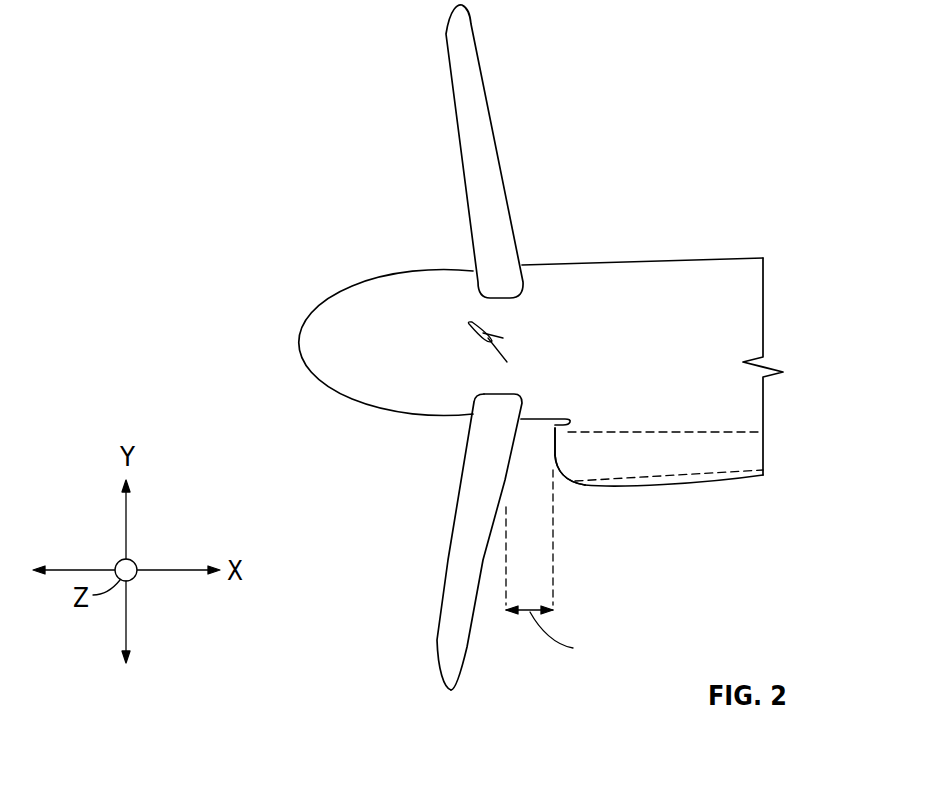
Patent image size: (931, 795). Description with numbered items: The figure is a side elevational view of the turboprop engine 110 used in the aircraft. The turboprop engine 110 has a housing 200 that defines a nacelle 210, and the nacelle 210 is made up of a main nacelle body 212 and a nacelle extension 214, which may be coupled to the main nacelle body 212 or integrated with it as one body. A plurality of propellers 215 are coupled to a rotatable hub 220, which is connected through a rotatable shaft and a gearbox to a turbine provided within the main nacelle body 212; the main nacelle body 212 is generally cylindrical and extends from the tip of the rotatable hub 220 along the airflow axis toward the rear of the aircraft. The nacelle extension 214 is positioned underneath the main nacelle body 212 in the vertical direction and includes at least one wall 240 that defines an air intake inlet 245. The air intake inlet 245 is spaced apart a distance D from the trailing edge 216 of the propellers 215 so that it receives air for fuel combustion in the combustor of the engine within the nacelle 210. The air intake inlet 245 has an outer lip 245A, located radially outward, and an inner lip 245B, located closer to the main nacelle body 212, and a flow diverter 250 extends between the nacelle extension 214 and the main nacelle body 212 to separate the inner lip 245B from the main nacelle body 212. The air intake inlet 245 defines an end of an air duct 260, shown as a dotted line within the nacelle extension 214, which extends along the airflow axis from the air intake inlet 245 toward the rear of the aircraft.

The turboprop engine 110 is at (623, 228).
The housing 200 is at (743, 293).
The nacelle 210 is at (412, 230).
The main nacelle body 212 is at (725, 275).
The nacelle extension 214 is at (719, 496).
The propellers 215 is at (437, 637).
The trailing edge 216 is at (465, 647).
The rotatable hub 220 is at (380, 302).
The wall 240 is at (630, 486).
The air intake inlet 245 is at (532, 480).
The outer lip 245A is at (567, 483).
The inner lip 245B is at (551, 430).
The flow diverter 250 is at (562, 419).
The air duct 260 is at (683, 424).